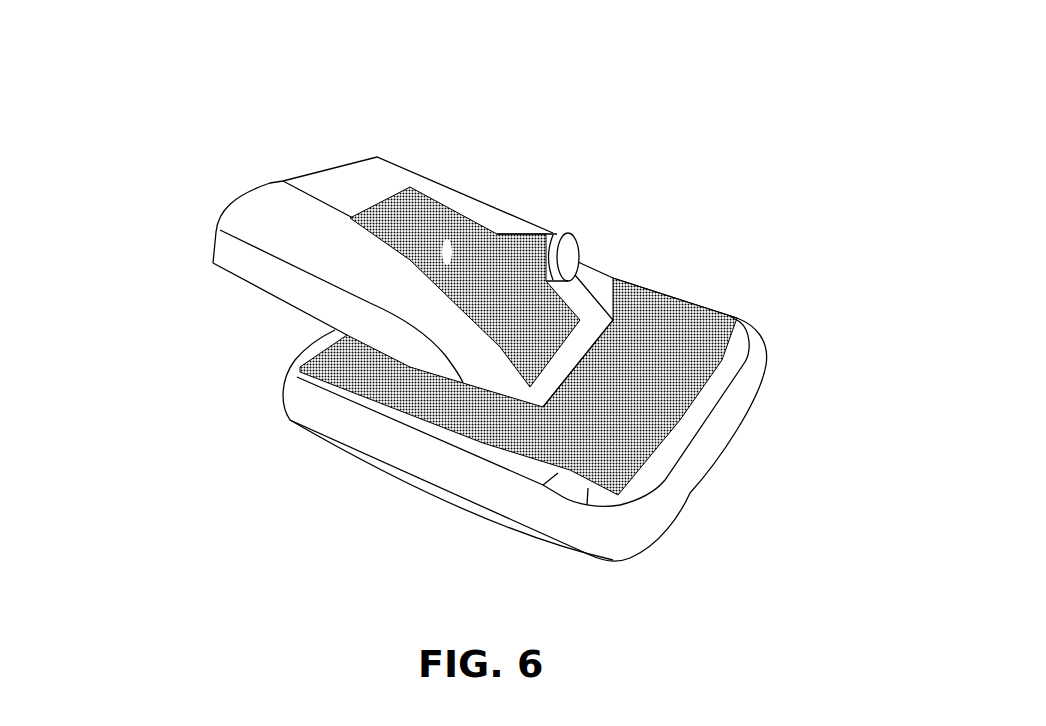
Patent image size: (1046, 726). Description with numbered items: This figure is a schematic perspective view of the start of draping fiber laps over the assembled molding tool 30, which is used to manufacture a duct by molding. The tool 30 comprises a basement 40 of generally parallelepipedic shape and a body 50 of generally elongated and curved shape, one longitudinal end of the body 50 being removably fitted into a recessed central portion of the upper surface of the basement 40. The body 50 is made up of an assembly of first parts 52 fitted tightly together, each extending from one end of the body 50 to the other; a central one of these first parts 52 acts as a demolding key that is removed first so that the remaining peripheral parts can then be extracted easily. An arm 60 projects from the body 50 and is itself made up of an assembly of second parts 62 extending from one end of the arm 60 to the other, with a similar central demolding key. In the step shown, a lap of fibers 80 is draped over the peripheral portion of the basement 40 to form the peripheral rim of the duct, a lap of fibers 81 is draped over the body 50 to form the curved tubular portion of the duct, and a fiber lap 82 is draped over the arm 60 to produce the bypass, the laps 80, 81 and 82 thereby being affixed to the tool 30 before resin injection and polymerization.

The molding tool 30 is at (170, 183).
The basement 40 is at (692, 418).
The body 50 is at (330, 187).
The first parts 52 is at (343, 283).
The arm 60 is at (553, 233).
The second parts 62 is at (563, 237).
The lap of fibers 80 is at (490, 442).
The lap of fibers 81 is at (343, 333).
The fiber lap 82 is at (500, 233).